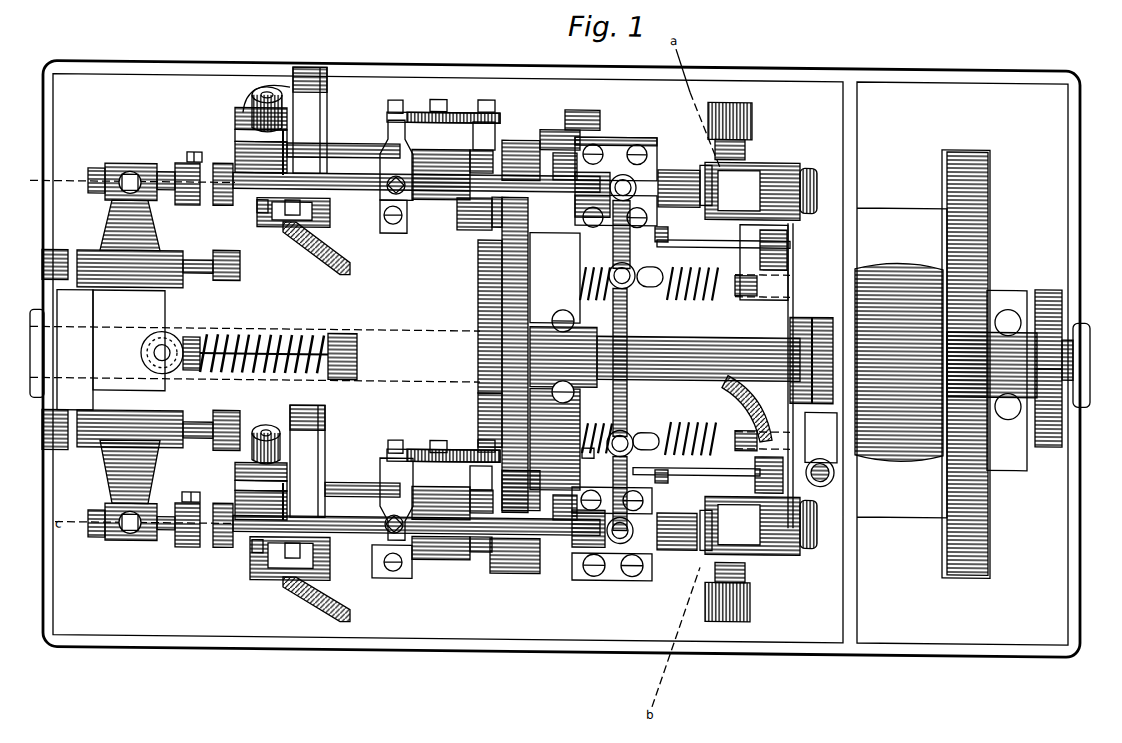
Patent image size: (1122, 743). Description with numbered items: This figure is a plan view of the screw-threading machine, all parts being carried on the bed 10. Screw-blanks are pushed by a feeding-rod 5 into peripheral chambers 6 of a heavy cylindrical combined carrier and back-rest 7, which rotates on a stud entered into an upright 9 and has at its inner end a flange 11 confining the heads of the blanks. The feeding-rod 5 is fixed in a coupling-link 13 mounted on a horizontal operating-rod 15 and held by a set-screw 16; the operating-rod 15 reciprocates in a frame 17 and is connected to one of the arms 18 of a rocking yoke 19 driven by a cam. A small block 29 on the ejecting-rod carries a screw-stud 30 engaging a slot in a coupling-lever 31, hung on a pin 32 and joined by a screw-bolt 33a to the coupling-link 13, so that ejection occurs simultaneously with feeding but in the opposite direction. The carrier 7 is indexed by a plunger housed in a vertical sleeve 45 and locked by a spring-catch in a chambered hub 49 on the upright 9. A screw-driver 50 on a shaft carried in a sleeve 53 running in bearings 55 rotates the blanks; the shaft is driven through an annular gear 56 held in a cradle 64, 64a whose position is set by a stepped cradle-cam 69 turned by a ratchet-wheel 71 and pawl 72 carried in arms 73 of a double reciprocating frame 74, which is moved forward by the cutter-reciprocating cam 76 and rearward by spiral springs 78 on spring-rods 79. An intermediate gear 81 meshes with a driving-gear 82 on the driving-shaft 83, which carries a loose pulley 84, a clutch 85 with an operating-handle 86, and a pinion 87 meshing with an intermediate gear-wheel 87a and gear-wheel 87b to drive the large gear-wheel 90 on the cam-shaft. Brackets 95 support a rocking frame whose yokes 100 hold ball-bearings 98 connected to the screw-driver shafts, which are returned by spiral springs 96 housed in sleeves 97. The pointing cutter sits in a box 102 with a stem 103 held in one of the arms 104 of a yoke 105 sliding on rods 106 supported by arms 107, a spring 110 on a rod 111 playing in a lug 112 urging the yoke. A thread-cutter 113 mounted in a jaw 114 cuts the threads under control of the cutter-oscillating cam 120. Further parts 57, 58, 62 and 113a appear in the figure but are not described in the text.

The feeding-rod 5 is at (343, 315).
The peripheral chambers 6 is at (235, 130).
The combined carrier and back-rest 7 is at (235, 118).
The upright 9 is at (308, 292).
The bed 10 is at (555, 358).
The flange 11 is at (292, 325).
The coupling-link 13 is at (396, 330).
The operating-rod 15 is at (416, 356).
The set-screw 16 is at (397, 349).
The frame 17 is at (591, 359).
The arms 18 is at (632, 280).
The rocking yoke 19 is at (638, 415).
The small block 29 is at (496, 122).
The screw-stud 30 is at (470, 445).
The coupling-lever 31 is at (455, 115).
The pin 32 is at (436, 270).
The screw-bolt 33a is at (396, 270).
The vertical sleeve or housing 45 is at (250, 92).
The chambered hub 49 is at (240, 109).
The screw-driver 50 is at (330, 258).
The sleeve 53 is at (480, 215).
The bearings 55 is at (410, 572).
The annular gear 56 is at (526, 135).
The collar 57 is at (580, 150).
The collar 58 is at (481, 331).
The sleeve 62 is at (441, 354).
The cradle 64 is at (477, 573).
The cradle 64a is at (556, 124).
The stepped cradle-cam 69 is at (660, 237).
The ratchet-wheel 71 is at (662, 233).
The pawl 72 is at (736, 241).
The arms 73 is at (772, 224).
The double reciprocating frame 74 is at (775, 283).
The cutter-reciprocating cam 76 is at (750, 398).
The spiral springs 78 is at (712, 296).
The spring-rods 79 is at (700, 294).
The intermediate gear 81 is at (500, 272).
The driving-gear 82 is at (478, 355).
The driving-shaft 83 is at (698, 358).
The loose pulley 84 is at (899, 362).
The clutch 85 is at (811, 360).
The operating-handle 86 is at (820, 478).
The pinion 87 is at (1035, 358).
The intermediate gear-wheel 87a is at (1062, 294).
The gear-wheel 87b is at (1062, 430).
The large gear-wheel 90 is at (945, 484).
The brackets 95 is at (752, 112).
The spiral springs 96 is at (703, 205).
The sleeves 97 is at (684, 168).
The ball-bearings 98 is at (760, 165).
The yokes 100 is at (745, 147).
The box 102 is at (190, 205).
The stem 103 is at (180, 162).
The arms 104 is at (130, 352).
The yoke 105 is at (128, 351).
The rods 106 is at (198, 258).
The arms 107 is at (42, 270).
The spring 110 is at (288, 326).
The rod 111 is at (312, 334).
The lug 112 is at (341, 330).
The thread-cutter 113 is at (300, 228).
The lug 113a is at (257, 210).
The jaw 114 is at (262, 582).
The cutter-oscillating cam 120 is at (478, 398).